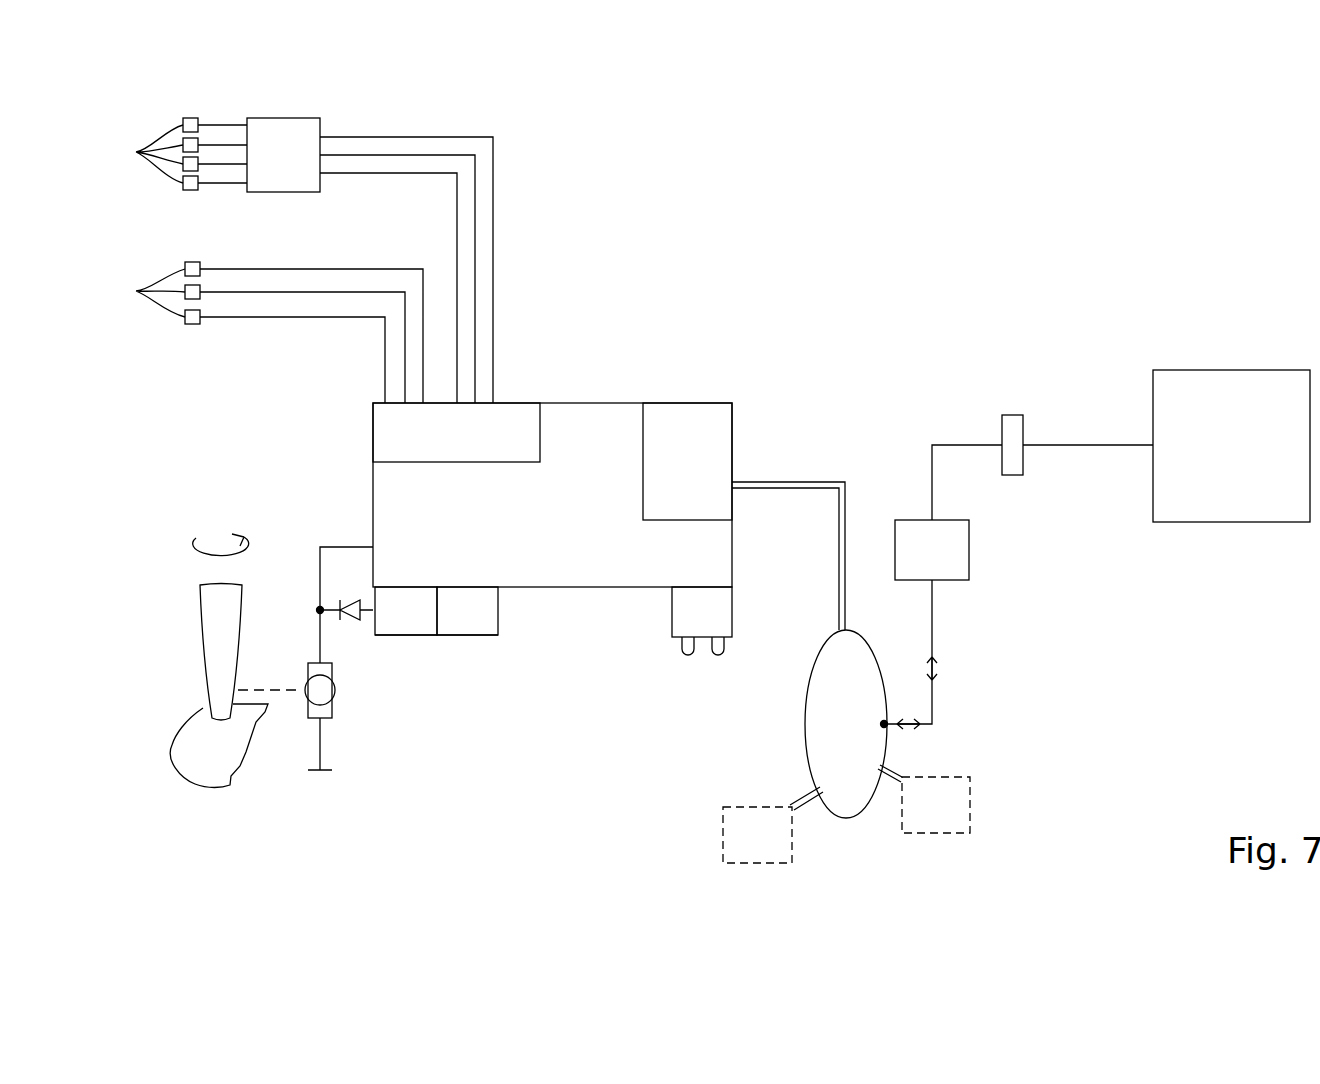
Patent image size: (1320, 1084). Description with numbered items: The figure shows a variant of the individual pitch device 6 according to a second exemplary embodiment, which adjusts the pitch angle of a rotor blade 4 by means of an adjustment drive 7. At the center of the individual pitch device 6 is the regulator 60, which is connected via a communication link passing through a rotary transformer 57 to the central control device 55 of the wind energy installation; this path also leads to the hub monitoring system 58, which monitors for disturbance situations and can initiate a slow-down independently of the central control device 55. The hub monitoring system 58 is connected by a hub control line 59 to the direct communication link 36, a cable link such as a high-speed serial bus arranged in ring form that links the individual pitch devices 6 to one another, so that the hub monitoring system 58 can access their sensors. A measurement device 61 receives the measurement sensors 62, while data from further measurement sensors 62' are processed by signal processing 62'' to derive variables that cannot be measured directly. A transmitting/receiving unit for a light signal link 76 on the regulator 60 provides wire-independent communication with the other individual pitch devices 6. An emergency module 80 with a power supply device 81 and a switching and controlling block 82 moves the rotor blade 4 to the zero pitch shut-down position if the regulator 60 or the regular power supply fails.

The measurement sensors 62' is at (175, 154).
The signal processing 62'' is at (370, 260).
The measurement sensors 62 is at (264, 332).
The measurement device 61 is at (513, 408).
The regulator 60 is at (525, 543).
The individual pitch device 6 is at (652, 370).
The switching and controlling block 82 is at (417, 637).
The power supply device 81 is at (472, 637).
The emergency module 80 is at (508, 642).
The light signal link transmitting/receiving unit 76 is at (723, 615).
The direct communication link 36 is at (867, 662).
The hub control line 59 is at (935, 705).
The hub monitoring system 58 is at (960, 552).
The rotary transformer 57 is at (1013, 423).
The central control device 55 is at (1233, 378).
The rotor blade 4 is at (208, 640).
The adjustment drive 7 is at (332, 692).